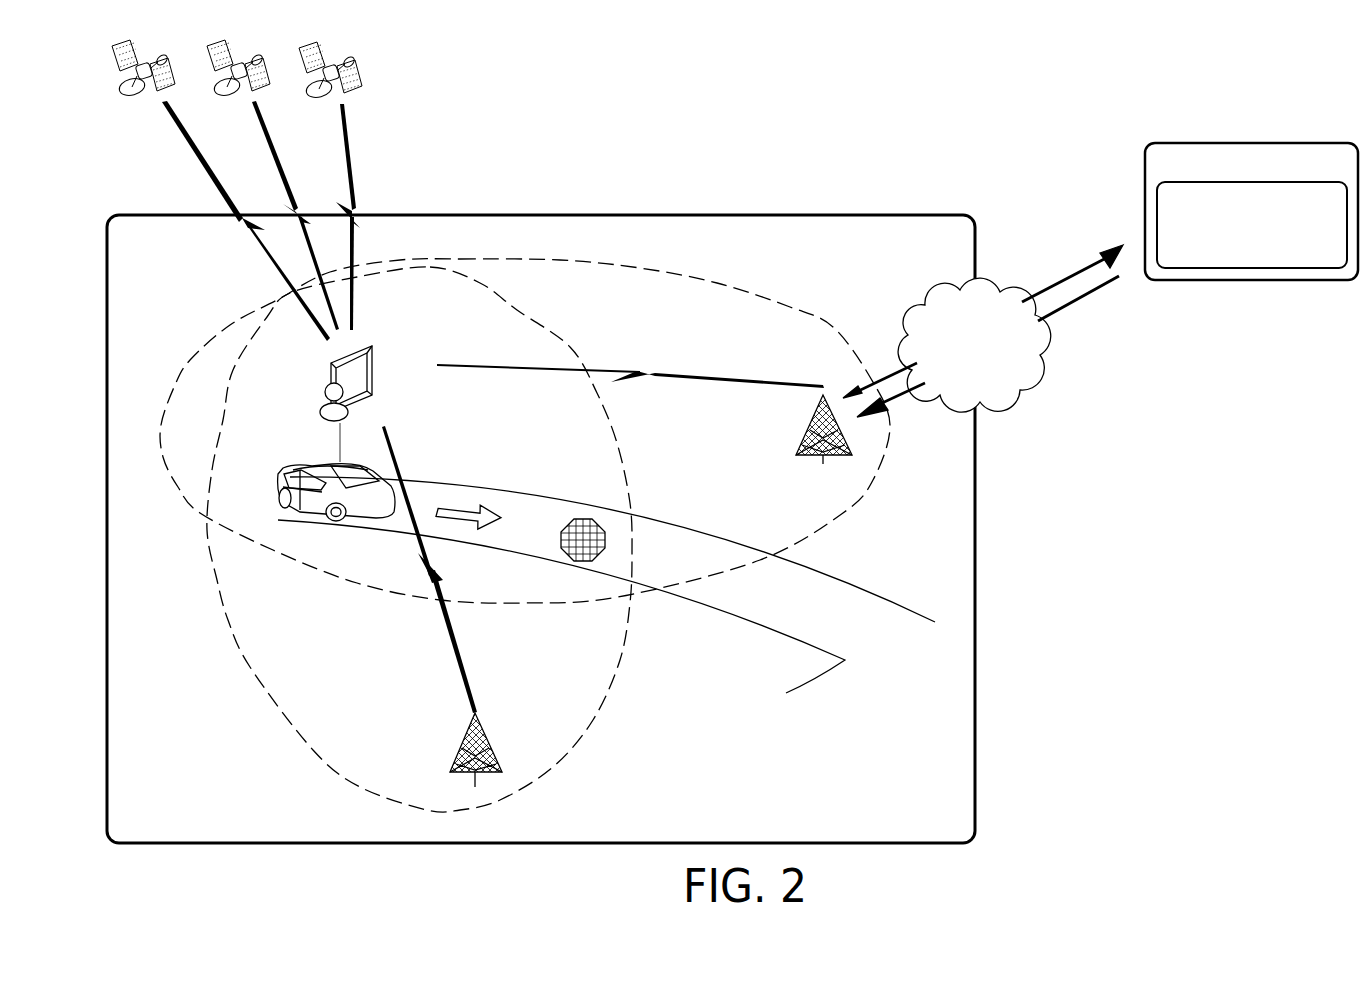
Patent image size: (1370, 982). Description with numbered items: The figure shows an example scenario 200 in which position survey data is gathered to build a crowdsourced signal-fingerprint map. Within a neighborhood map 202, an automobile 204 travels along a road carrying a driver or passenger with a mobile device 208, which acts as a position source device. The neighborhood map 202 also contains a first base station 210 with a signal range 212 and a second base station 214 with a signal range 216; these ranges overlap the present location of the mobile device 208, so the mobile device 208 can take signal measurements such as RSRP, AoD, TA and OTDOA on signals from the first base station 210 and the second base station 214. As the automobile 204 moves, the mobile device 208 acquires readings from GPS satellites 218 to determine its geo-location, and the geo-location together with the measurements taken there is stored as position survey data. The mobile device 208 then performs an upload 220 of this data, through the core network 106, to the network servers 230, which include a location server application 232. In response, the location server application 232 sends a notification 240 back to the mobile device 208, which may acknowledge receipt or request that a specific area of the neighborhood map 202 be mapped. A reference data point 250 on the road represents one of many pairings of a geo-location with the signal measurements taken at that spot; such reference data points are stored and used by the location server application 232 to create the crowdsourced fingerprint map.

The example scenario 200 is at (717, 459).
The neighborhood map 202 is at (541, 529).
The automobile 204 is at (305, 468).
The mobile device 208 is at (370, 348).
The first base station 210 is at (452, 774).
The signal range 212 is at (249, 668).
The second base station 214 is at (796, 456).
The signal range 216 is at (715, 289).
The GPS satellites 218 is at (412, 42).
The upload 220 is at (1082, 266).
The notification 240 is at (1073, 302).
The reference data point 250 is at (578, 518).
The core network 106 is at (947, 347).
The network servers 230 is at (1251, 211).
The location server application 232 is at (1252, 225).